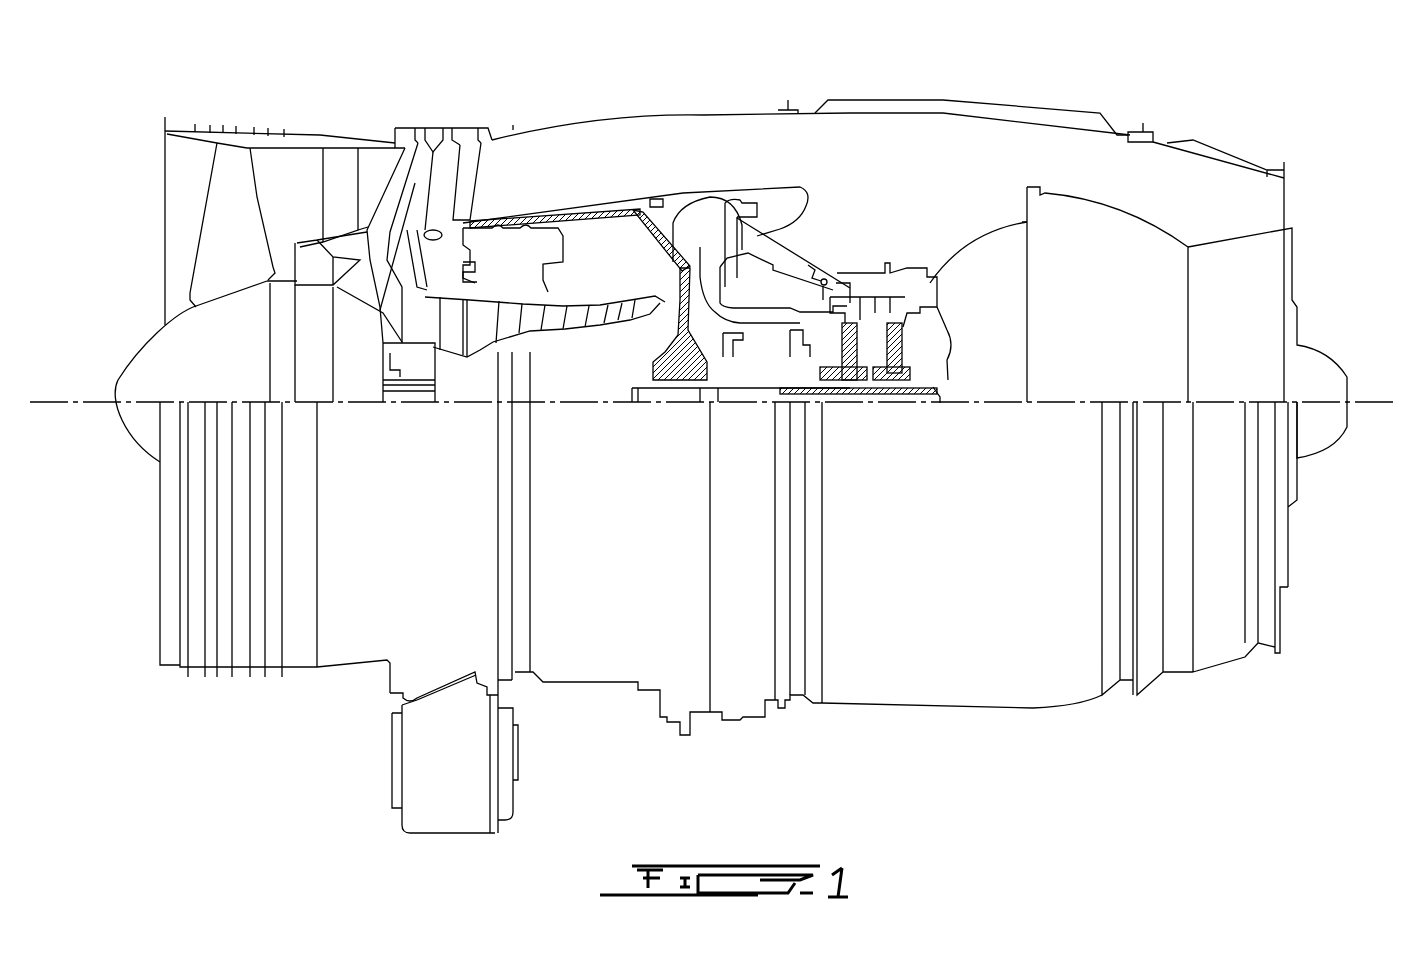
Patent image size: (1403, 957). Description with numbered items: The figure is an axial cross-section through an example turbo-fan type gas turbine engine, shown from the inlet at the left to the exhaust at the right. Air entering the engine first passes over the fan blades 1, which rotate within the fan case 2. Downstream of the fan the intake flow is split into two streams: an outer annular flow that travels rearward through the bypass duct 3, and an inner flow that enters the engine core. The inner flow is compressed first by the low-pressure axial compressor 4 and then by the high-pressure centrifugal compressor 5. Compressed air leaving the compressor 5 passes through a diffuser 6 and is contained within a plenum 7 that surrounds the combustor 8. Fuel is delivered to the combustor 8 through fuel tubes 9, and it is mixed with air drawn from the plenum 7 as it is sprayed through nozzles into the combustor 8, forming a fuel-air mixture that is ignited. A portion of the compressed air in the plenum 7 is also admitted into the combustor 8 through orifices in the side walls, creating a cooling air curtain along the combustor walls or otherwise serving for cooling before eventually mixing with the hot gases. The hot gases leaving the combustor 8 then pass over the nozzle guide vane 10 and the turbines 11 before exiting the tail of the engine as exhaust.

The fan blades 1 is at (236, 248).
The fan case 2 is at (300, 130).
The bypass duct 3 is at (582, 180).
The low-pressure axial compressor 4 is at (480, 338).
The high-pressure centrifugal compressor 5 is at (645, 328).
The diffuser 6 is at (705, 223).
The plenum 7 is at (787, 265).
The combustor 8 is at (762, 299).
The fuel tubes 9 is at (790, 240).
The nozzle guide vane 10 is at (840, 277).
The turbines 11 is at (850, 277).